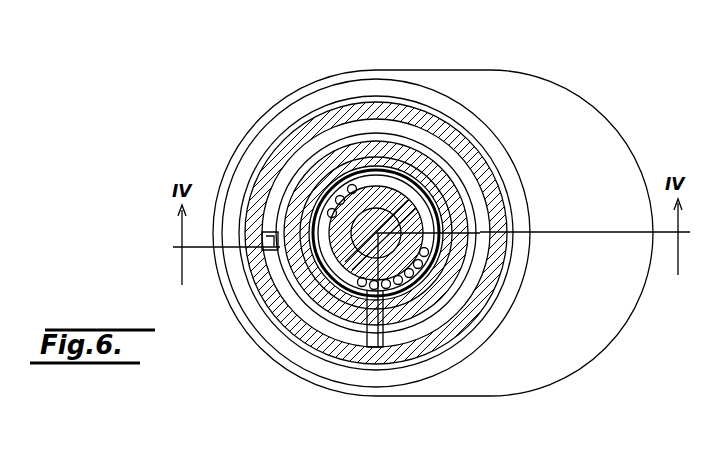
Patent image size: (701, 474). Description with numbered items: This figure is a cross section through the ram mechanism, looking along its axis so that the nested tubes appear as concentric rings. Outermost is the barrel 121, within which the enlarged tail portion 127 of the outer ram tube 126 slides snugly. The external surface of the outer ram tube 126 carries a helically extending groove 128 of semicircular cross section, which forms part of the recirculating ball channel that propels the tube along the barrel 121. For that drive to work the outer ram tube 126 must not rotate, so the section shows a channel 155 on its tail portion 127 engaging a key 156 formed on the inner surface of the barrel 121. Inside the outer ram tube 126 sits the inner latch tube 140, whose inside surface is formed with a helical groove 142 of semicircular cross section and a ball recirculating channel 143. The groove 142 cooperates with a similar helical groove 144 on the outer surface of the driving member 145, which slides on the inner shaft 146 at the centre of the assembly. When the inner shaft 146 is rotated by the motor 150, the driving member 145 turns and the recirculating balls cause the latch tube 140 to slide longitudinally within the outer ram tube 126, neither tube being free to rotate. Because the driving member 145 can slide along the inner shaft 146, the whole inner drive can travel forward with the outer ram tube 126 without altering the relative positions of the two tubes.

The barrel 121 is at (300, 124).
The outer ram tube 126 is at (352, 292).
The tail portion 127 is at (335, 135).
The helically extending groove 128 is at (300, 166).
The inner latch tube 140 is at (332, 275).
The helical groove 142 is at (436, 266).
The ball recirculating channel 143 is at (366, 283).
The helical groove 144 is at (432, 247).
The driving member 145 is at (394, 172).
The inner shaft 146 is at (415, 172).
The motor 150 is at (580, 358).
The channel 155 is at (280, 262).
The key 156 is at (268, 241).